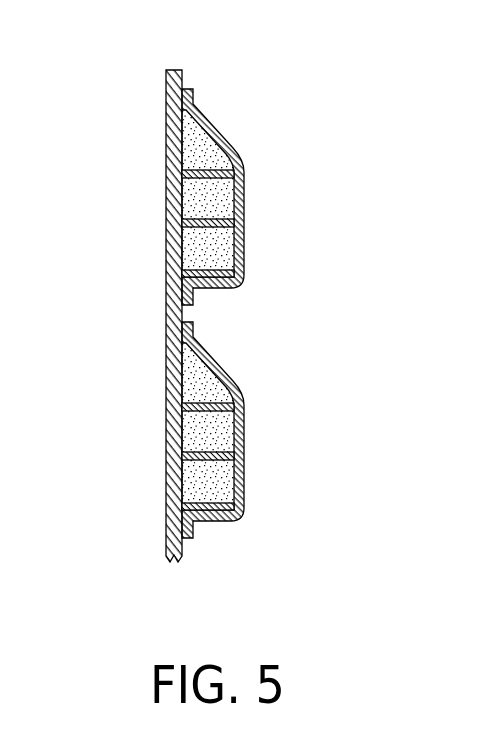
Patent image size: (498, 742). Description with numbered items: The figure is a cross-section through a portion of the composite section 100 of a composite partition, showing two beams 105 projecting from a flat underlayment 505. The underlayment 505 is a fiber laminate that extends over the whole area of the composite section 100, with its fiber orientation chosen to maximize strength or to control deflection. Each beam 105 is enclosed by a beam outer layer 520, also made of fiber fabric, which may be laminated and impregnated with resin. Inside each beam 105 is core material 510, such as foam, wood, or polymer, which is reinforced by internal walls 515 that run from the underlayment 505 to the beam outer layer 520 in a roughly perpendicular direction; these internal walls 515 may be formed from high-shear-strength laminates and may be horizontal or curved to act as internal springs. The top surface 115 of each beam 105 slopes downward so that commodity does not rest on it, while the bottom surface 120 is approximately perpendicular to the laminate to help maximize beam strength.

The composite section 100 is at (281, 156).
The beam 105 is at (270, 440).
The top surface 115 is at (260, 416).
The bottom surface 120 is at (272, 544).
The underlayment 505 is at (165, 130).
The core material 510 is at (203, 197).
The internal walls 515 is at (221, 268).
The beam outer layer 520 is at (243, 184).